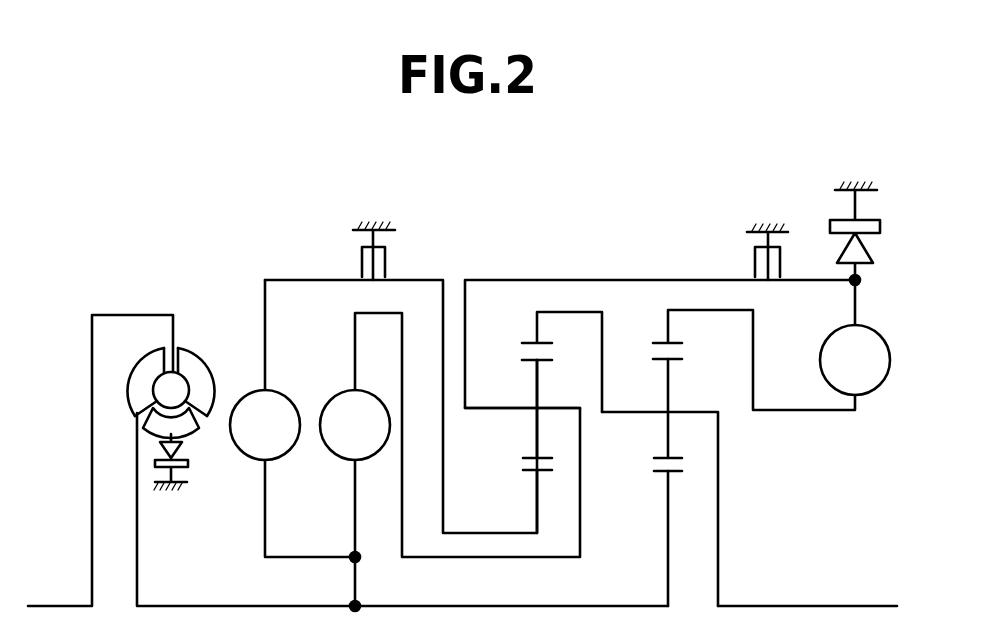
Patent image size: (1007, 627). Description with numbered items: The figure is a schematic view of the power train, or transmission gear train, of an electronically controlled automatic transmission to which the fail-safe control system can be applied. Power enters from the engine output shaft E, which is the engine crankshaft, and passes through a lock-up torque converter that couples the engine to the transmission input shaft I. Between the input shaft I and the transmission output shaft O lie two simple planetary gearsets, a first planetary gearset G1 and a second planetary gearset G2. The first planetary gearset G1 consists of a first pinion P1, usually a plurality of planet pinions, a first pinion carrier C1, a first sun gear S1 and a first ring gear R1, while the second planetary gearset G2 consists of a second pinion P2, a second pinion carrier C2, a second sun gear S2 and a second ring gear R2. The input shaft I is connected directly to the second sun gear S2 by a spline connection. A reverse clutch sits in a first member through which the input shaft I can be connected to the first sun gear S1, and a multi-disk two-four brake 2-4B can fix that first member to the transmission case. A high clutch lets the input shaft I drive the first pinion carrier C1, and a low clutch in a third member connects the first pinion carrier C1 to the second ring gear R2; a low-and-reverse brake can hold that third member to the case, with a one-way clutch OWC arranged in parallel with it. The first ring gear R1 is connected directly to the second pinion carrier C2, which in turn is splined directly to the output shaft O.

The engine output shaft E is at (82, 606).
The transmission input shaft I is at (240, 606).
The 2-4 brake 2-4B is at (362, 255).
The first planetary gearset G1 is at (532, 370).
The first ring gear R1 is at (537, 322).
The first pinion carrier C1 is at (496, 408).
The first pinion P1 is at (537, 433).
The first sun gear S1 is at (537, 499).
The second planetary gearset G2 is at (723, 406).
The second ring gear R2 is at (668, 322).
The second pinion carrier C2 is at (630, 412).
The second pinion P2 is at (668, 433).
The second sun gear S2 is at (668, 517).
The one-way clutch OWC is at (836, 250).
The transmission output shaft O is at (822, 606).